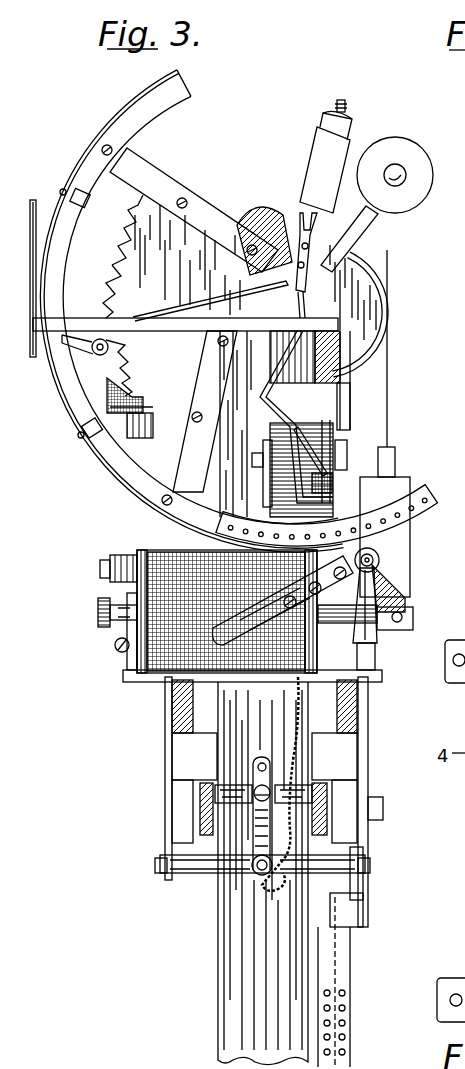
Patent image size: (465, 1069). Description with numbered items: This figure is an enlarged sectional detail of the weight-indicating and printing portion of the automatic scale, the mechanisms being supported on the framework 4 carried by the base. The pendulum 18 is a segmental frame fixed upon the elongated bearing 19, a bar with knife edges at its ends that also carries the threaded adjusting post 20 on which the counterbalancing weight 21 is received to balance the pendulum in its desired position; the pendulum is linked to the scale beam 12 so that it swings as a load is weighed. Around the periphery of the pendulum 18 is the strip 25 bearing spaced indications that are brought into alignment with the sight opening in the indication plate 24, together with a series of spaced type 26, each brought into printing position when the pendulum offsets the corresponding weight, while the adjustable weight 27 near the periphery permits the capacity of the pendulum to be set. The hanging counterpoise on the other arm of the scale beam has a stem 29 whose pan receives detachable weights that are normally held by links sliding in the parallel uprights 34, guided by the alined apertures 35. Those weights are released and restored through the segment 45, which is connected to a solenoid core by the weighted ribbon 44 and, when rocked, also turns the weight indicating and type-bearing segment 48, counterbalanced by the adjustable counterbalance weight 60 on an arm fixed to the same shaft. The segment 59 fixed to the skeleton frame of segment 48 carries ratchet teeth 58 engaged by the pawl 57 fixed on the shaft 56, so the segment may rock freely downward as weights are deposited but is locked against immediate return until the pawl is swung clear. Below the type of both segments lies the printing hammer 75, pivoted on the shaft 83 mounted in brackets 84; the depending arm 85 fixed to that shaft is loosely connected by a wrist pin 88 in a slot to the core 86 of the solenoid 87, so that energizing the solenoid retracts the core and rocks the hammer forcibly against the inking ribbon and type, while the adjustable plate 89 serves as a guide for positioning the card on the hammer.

The framework 4 is at (220, 979).
The scale beam 12 is at (210, 832).
The pendulum 18 is at (128, 472).
The elongated bearing 19 is at (284, 212).
The threaded adjusting post 20 is at (347, 108).
The counterbalancing weight 21 is at (340, 149).
The indication plate 24 is at (35, 200).
The strip 25 is at (67, 412).
The type 26 is at (426, 517).
The weight 27 is at (337, 479).
The stem 29 is at (338, 907).
The parallel uprights 34 is at (345, 994).
The alined apertures 35 is at (345, 1024).
The weighted ribbon 44 is at (388, 435).
The segment 45 is at (353, 264).
The weight indicating and type-bearing segment 48 is at (190, 88).
The shaft 56 is at (96, 352).
The pawl 57 is at (108, 362).
The ratchet teeth 58 is at (110, 287).
The segment 59 is at (128, 240).
The counterbalance weight 60 is at (418, 163).
The printing hammer 75 is at (235, 610).
The shaft 83 is at (372, 560).
The brackets 84 is at (377, 641).
The depending arm 85 is at (400, 601).
The core 86 is at (413, 617).
The solenoid 87 is at (143, 676).
The wrist pin 88 is at (402, 623).
The adjustable plate 89 is at (333, 590).